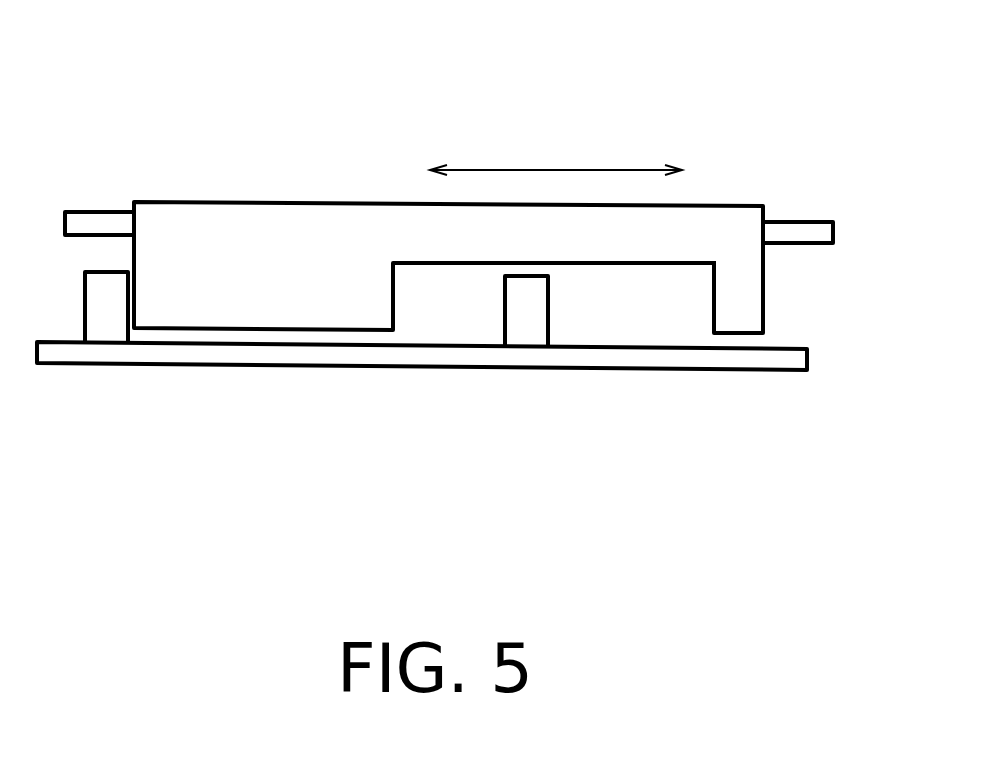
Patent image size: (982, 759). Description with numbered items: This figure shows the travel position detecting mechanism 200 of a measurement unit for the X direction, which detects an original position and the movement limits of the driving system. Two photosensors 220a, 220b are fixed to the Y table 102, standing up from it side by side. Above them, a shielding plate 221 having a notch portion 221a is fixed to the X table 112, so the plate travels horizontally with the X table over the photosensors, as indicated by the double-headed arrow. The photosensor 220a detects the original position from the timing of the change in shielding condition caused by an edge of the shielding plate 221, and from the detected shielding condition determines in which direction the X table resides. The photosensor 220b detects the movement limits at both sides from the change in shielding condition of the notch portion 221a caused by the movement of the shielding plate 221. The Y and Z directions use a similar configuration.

The travel position detecting mechanism 200 is at (675, 118).
The shielding plate 221 is at (680, 231).
The notch portion 221a is at (598, 306).
The X table 112 is at (95, 225).
The photosensor 220a is at (98, 310).
The photosensor 220b is at (529, 320).
The Y table 102 is at (323, 350).